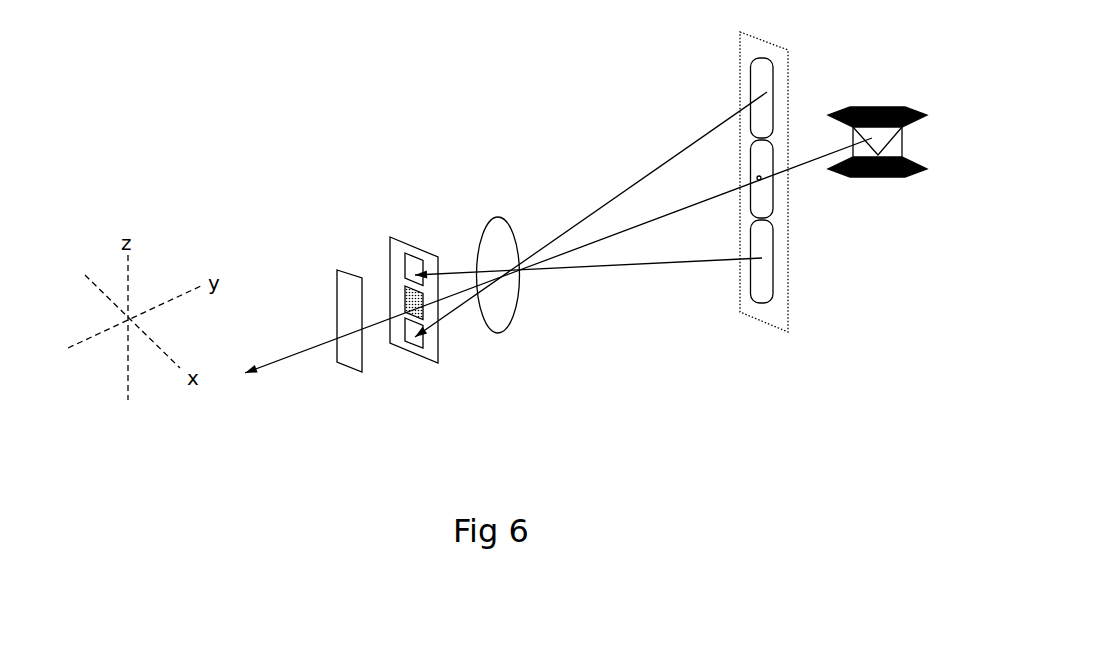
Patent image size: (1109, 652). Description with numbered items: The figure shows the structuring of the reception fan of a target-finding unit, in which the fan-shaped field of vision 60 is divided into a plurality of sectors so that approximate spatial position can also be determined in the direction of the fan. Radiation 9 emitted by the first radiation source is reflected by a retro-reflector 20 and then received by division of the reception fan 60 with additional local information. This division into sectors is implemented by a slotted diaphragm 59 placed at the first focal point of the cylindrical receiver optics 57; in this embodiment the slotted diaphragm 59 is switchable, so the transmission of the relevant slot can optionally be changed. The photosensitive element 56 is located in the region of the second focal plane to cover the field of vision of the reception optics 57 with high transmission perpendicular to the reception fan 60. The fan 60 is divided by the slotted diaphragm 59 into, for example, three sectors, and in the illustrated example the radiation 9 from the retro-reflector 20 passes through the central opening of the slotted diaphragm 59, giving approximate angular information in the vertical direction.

The radiation 9 is at (558, 232).
The retro-reflector 20 is at (894, 122).
The photosensitive element 56 is at (350, 302).
The cylindrical receiver optics 57 is at (522, 290).
The slotted diaphragm 59 is at (361, 266).
The reception fan 60 is at (737, 72).